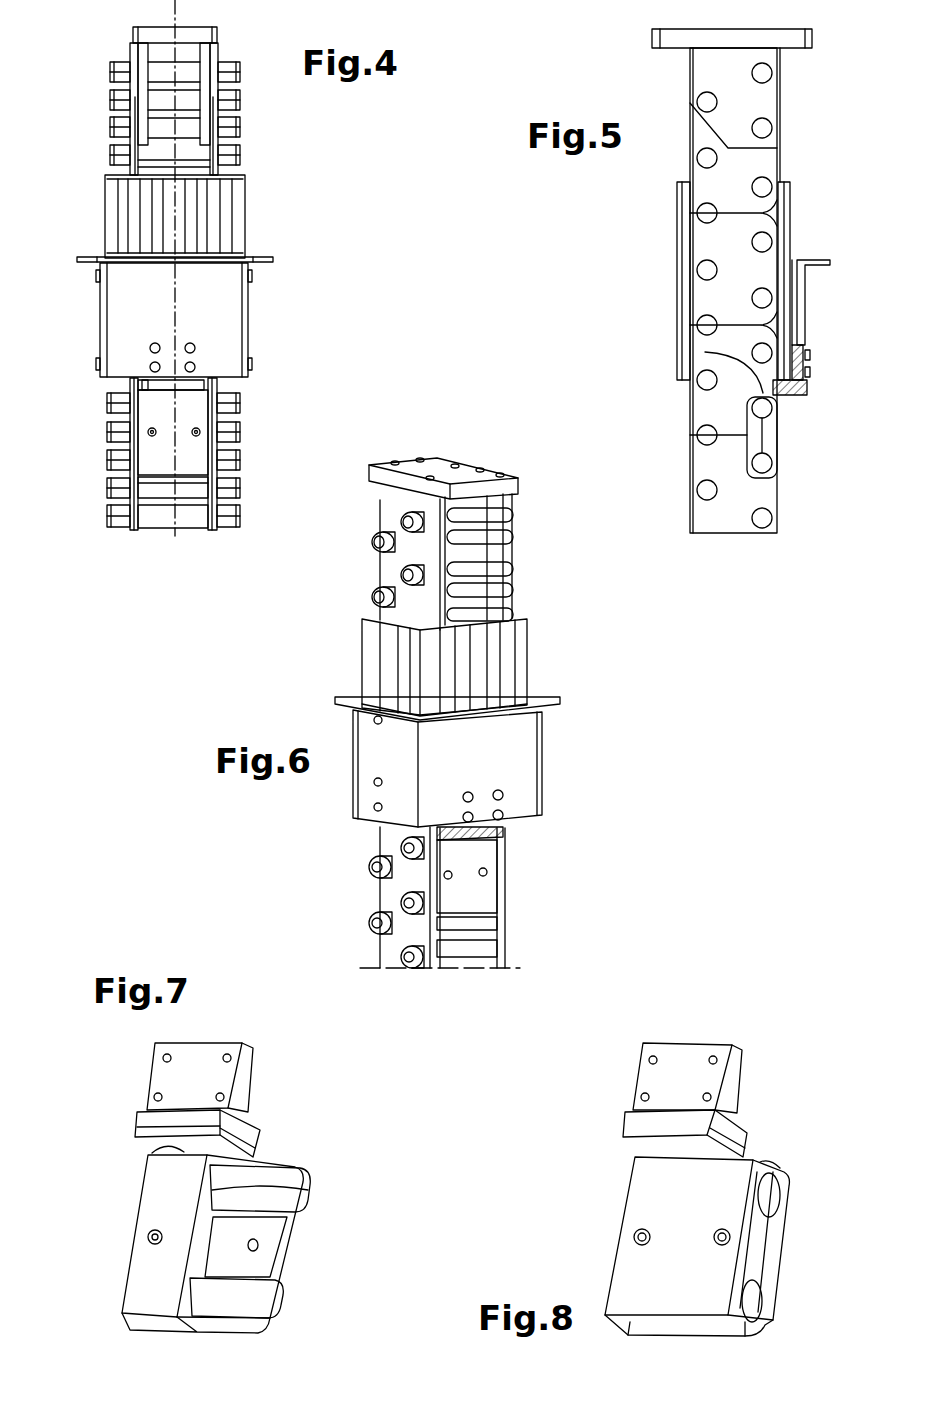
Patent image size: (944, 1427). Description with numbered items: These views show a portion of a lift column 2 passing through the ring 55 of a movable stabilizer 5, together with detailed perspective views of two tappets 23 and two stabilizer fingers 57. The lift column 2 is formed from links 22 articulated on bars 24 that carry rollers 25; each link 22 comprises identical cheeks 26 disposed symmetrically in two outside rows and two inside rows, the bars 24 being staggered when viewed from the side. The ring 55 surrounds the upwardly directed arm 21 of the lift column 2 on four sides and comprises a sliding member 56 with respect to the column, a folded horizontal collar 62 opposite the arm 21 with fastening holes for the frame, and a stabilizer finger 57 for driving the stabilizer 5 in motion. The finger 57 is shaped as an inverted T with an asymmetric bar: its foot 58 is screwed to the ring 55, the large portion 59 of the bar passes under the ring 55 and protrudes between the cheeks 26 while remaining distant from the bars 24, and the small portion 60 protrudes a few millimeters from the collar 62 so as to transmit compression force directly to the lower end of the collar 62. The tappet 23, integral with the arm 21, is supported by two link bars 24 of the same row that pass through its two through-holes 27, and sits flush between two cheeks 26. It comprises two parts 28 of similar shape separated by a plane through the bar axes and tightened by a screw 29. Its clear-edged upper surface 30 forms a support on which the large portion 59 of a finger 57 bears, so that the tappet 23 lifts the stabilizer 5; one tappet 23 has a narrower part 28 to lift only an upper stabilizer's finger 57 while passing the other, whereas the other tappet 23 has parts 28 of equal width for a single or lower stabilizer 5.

In FIG. 4, the lift column 2 is at (168, 485).
In FIG. 4, the movable stabilizer 5 is at (176, 253).
In FIG. 4, the upwardly directed arm 21 is at (168, 485).
In FIG. 5, the upwardly directed arm 21 is at (742, 298).
In FIG. 6, the upwardly directed arm 21 is at (451, 897).
In FIG. 4, the links 22 is at (213, 405).
In FIG. 5, the links 22 is at (702, 398).
In FIG. 4, the tappet 23 is at (198, 458).
In FIG. 5, the tappet 23 is at (770, 442).
In FIG. 6, the tappet 23 is at (470, 856).
In FIG. 7, the tappet 23 is at (201, 1267).
In FIG. 8, the tappet 23 is at (711, 1235).
In FIG. 4, the bars 24 is at (152, 518).
In FIG. 5, the bars 24 is at (768, 513).
In FIG. 6, the bars 24 is at (471, 515).
In FIG. 4, the rollers 25 is at (226, 486).
In FIG. 6, the rollers 25 is at (508, 896).
In FIG. 4, the cheeks 26 is at (118, 430).
In FIG. 5, the cheeks 26 is at (755, 281).
In FIG. 6, the cheeks 26 is at (388, 892).
In FIG. 8, the cheeks 26 is at (753, 1258).
In FIG. 7, the through-holes 27 is at (272, 1190).
In FIG. 8, the through-holes 27 is at (770, 1190).
In FIG. 7, the parts 28 is at (135, 1320).
In FIG. 7, the screw 29 is at (146, 1228).
In FIG. 8, the screw 29 is at (634, 1237).
In FIG. 4, the upper surface 30 is at (150, 389).
In FIG. 5, the upper surface 30 is at (705, 352).
In FIG. 7, the upper surface 30 is at (152, 1147).
In FIG. 8, the upper surface 30 is at (778, 1168).
In FIG. 4, the ring 55 is at (255, 312).
In FIG. 5, the ring 55 is at (674, 250).
In FIG. 6, the ring 55 is at (447, 768).
In FIG. 4, the sliding member 56 is at (236, 178).
In FIG. 5, the sliding member 56 is at (783, 213).
In FIG. 6, the sliding member 56 is at (515, 618).
In FIG. 4, the stabilizer finger 57 is at (195, 389).
In FIG. 5, the stabilizer finger 57 is at (790, 395).
In FIG. 6, the stabilizer finger 57 is at (493, 828).
In FIG. 7, the stabilizer finger 57 is at (216, 1099).
In FIG. 8, the stabilizer finger 57 is at (688, 1063).
In FIG. 7, the foot 58 is at (236, 1078).
In FIG. 8, the foot 58 is at (730, 1077).
In FIG. 7, the large portion 59 is at (250, 1140).
In FIG. 8, the large portion 59 is at (735, 1126).
In FIG. 7, the small portion 60 is at (150, 1126).
In FIG. 8, the small portion 60 is at (637, 1126).
In FIG. 4, the collar 62 is at (249, 258).
In FIG. 5, the collar 62 is at (806, 320).
In FIG. 6, the collar 62 is at (560, 697).